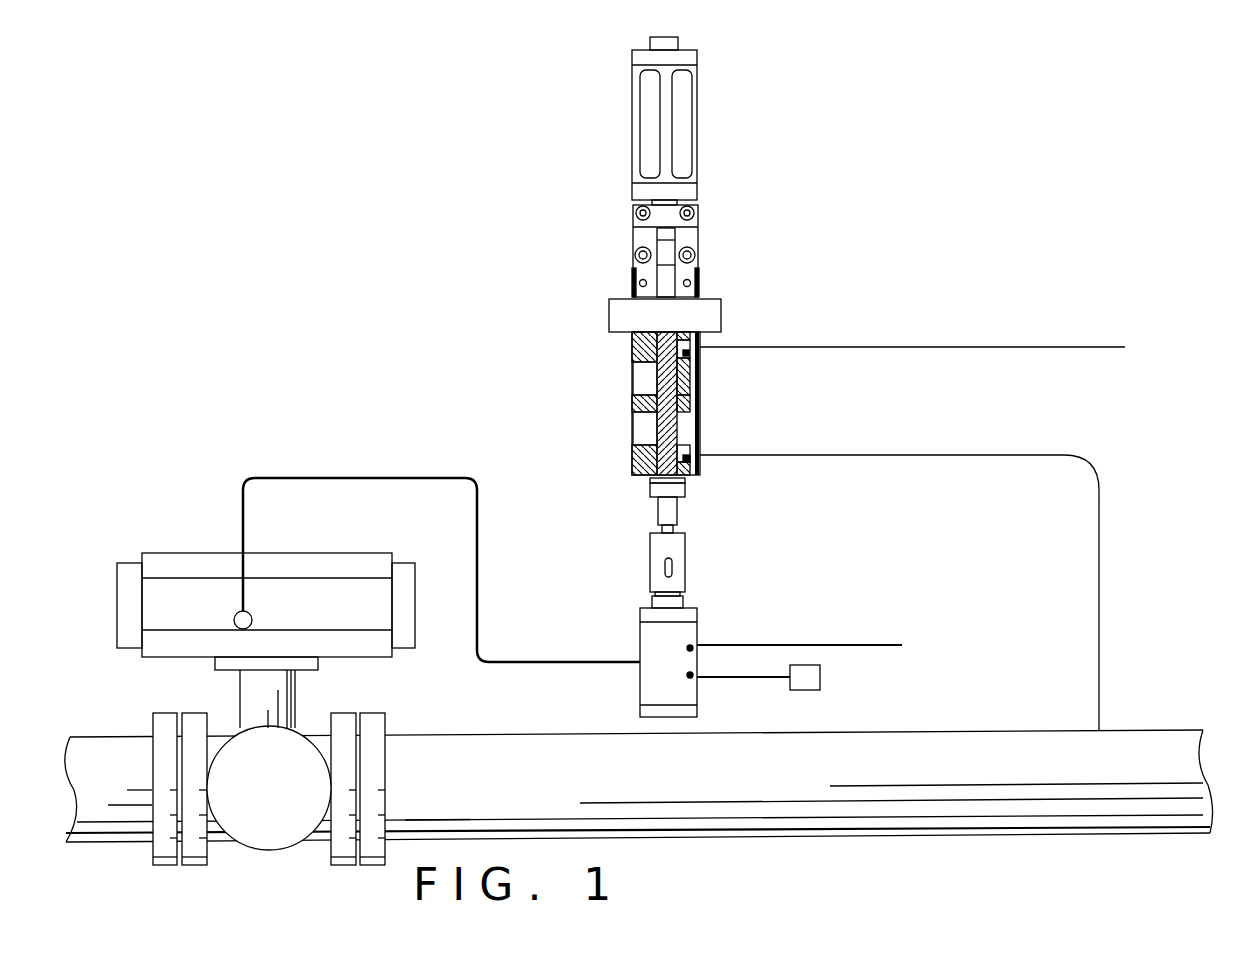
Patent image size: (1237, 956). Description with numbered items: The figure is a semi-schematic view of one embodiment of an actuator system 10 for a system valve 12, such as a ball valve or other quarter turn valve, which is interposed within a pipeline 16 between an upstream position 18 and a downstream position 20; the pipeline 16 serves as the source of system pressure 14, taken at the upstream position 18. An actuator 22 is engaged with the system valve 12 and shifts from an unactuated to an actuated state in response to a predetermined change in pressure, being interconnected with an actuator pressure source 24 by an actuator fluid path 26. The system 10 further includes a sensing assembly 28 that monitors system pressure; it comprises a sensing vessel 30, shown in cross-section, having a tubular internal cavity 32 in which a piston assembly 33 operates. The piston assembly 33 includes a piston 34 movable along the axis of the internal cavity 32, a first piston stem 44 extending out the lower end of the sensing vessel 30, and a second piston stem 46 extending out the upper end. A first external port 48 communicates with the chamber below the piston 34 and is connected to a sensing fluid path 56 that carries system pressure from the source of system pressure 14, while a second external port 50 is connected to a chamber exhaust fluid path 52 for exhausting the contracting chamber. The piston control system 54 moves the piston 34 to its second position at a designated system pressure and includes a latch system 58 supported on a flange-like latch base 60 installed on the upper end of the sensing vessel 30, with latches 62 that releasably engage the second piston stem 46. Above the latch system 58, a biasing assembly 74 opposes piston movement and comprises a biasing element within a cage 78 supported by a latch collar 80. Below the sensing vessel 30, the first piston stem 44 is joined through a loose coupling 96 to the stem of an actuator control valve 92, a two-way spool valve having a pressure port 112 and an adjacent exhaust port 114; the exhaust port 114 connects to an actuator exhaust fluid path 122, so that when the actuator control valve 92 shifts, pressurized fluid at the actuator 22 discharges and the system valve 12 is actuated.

The actuator system 10 is at (712, 37).
The system valve 12 is at (286, 804).
The source of system pressure 14 is at (440, 733).
The pipeline 16 is at (900, 730).
The upstream position 18 is at (450, 803).
The downstream position 20 is at (116, 784).
The actuator 22 is at (178, 560).
The actuator pressure source 24 is at (808, 677).
The actuator fluid path 26 is at (355, 478).
The sensing assembly 28 is at (645, 389).
The sensing vessel 30 is at (632, 348).
The internal cavity 32 is at (643, 382).
The piston assembly 33 is at (705, 435).
The piston 34 is at (703, 403).
The first piston stem 44 is at (645, 428).
The second piston stem 46 is at (667, 378).
The first external port 48 is at (705, 463).
The second external port 50 is at (703, 357).
The chamber exhaust fluid path 52 is at (853, 347).
The piston control system 54 is at (1100, 447).
The sensing fluid path 56 is at (1099, 534).
The latch system 58 is at (679, 251).
The latch base 60 is at (712, 317).
The latch 62 is at (642, 237).
The biasing assembly 74 is at (674, 127).
The cage 78 is at (635, 112).
The latch collar 80 is at (640, 192).
The actuator control valve 92 is at (640, 633).
The loose coupling 96 is at (698, 552).
The pressure port 112 is at (690, 675).
The exhaust port 114 is at (690, 648).
The actuator exhaust fluid path 122 is at (837, 645).